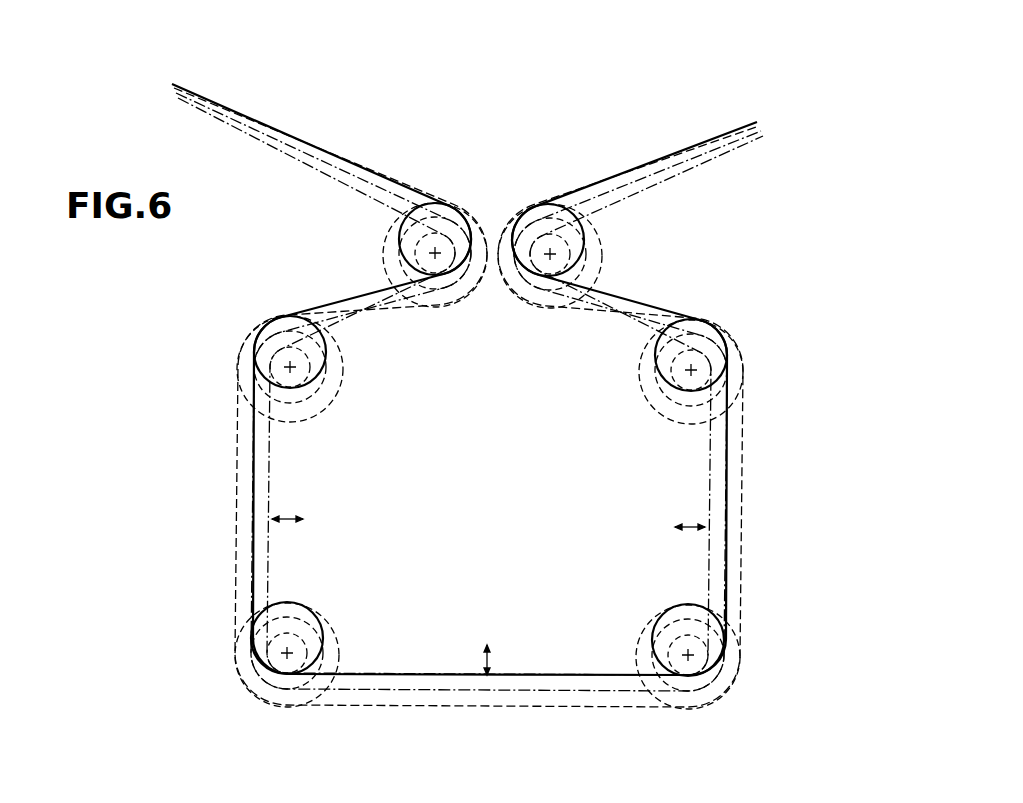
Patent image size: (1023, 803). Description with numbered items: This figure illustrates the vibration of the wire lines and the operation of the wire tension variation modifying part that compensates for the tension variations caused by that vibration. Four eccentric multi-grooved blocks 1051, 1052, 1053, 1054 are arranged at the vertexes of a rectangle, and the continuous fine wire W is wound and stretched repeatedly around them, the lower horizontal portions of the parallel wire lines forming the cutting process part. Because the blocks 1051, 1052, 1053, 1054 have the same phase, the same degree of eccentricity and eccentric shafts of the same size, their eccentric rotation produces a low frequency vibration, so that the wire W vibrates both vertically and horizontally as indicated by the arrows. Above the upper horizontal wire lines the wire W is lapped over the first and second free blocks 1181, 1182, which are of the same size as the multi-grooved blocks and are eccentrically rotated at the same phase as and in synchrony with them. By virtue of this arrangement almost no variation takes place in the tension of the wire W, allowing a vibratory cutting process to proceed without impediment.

The wire W is at (372, 166).
The first free block 1181 is at (383, 249).
The second free block 1182 is at (604, 240).
The multi-grooved block 1051 is at (304, 610).
The multi-grooved block 1052 is at (672, 614).
The multi-grooved block 1053 is at (272, 322).
The multi-grooved block 1054 is at (706, 326).